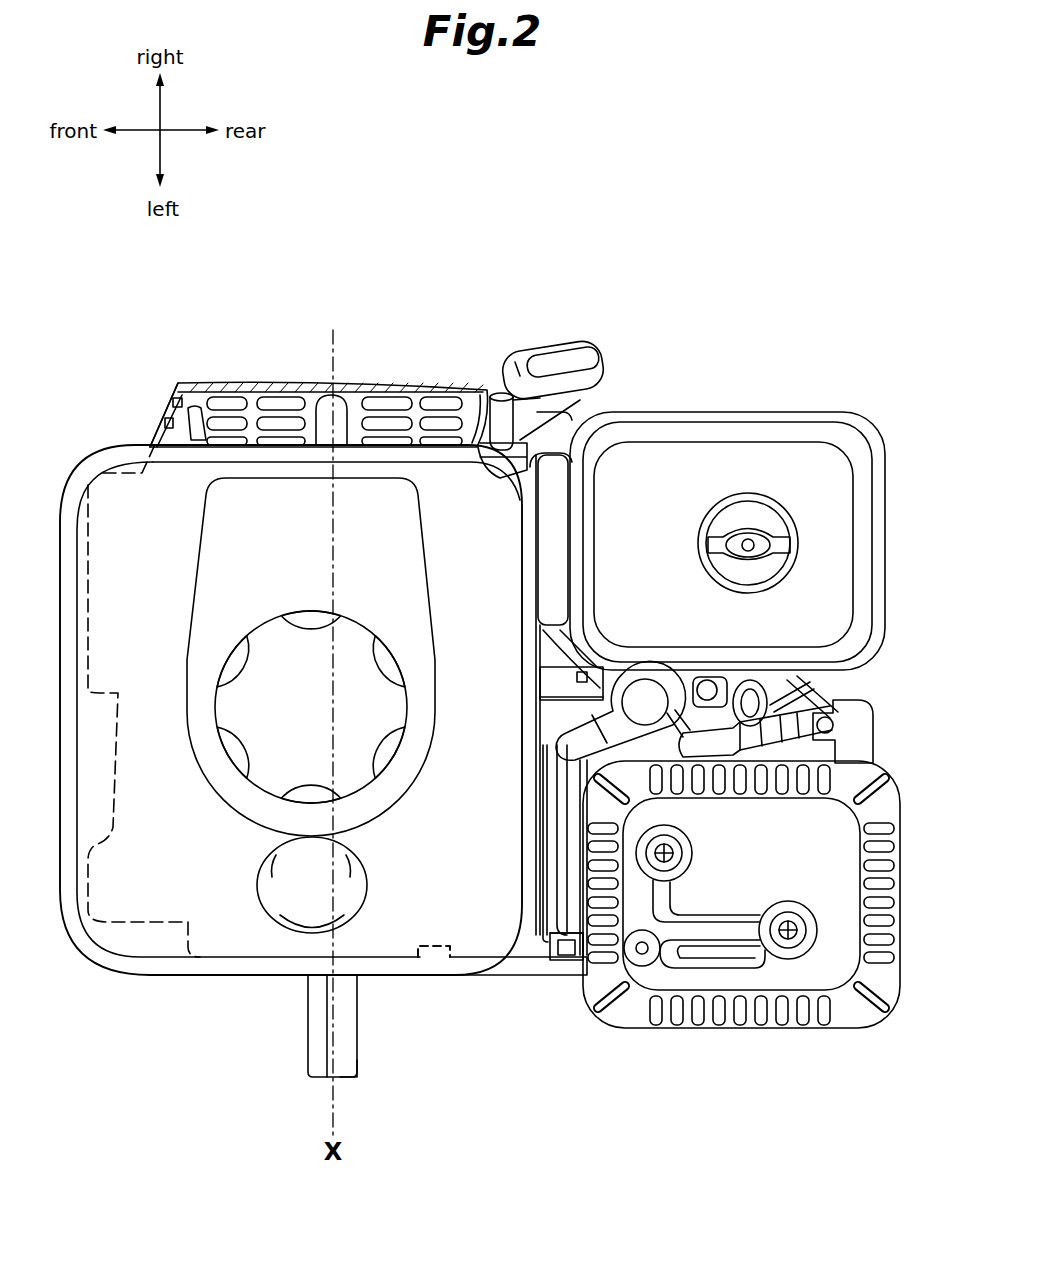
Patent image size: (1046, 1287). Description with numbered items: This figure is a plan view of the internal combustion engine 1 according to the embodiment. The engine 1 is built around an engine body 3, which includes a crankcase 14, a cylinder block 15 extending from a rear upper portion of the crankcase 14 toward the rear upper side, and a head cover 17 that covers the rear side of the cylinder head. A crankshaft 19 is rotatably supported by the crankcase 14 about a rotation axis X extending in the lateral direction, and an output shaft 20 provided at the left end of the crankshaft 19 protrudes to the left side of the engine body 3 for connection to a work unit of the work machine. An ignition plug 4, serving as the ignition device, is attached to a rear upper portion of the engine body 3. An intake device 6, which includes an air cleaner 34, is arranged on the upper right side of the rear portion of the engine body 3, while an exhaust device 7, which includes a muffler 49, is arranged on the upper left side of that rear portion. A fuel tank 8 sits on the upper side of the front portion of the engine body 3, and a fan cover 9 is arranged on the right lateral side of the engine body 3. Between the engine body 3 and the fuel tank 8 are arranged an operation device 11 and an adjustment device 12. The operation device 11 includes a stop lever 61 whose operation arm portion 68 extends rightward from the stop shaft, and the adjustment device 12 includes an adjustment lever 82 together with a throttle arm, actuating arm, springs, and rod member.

The engine 1 is at (814, 307).
The engine body 3 is at (526, 968).
The ignition plug 4 is at (848, 725).
The intake device 6 is at (726, 496).
The exhaust device 7 is at (741, 938).
The fuel tank 8 is at (95, 953).
The fan cover 9 is at (293, 375).
The operation device 11 is at (192, 392).
The adjustment device 12 is at (573, 716).
The crankcase 14 is at (428, 948).
The cylinder block 15 is at (560, 960).
The head cover 17 is at (873, 755).
The crankshaft 19 is at (360, 1082).
The output shaft 20 is at (307, 1022).
The air cleaner 34 is at (859, 416).
The muffler 49 is at (862, 1042).
The stop lever 61 is at (180, 435).
The operation arm portion 68 is at (218, 437).
The adjustment lever 82 is at (601, 691).